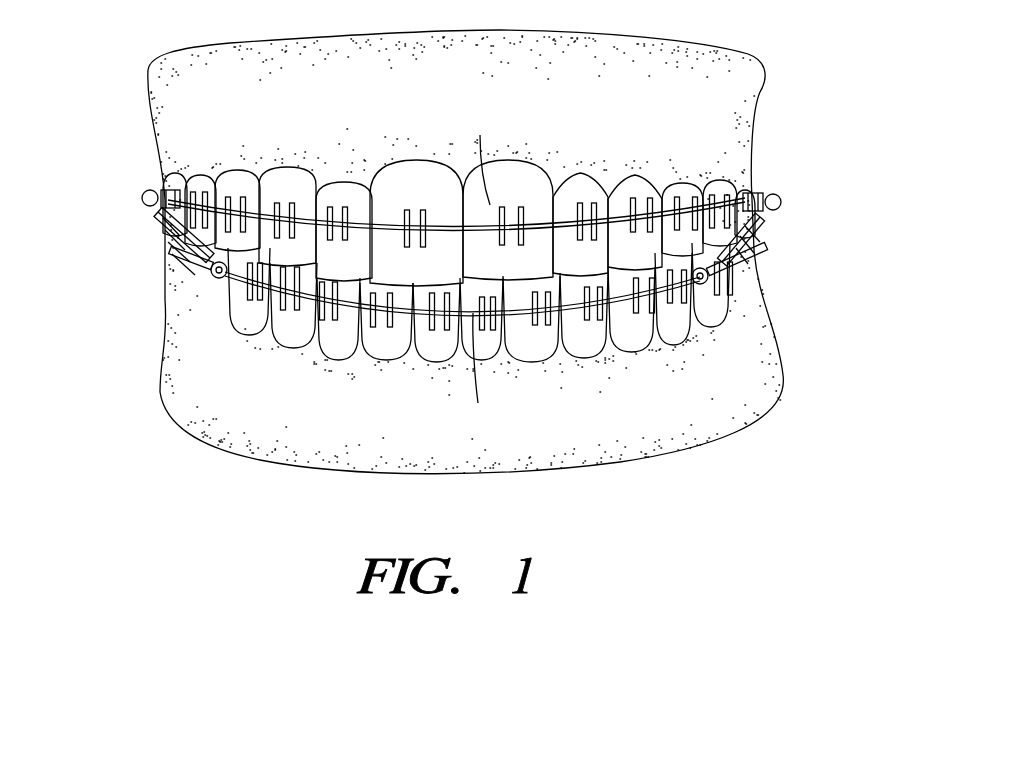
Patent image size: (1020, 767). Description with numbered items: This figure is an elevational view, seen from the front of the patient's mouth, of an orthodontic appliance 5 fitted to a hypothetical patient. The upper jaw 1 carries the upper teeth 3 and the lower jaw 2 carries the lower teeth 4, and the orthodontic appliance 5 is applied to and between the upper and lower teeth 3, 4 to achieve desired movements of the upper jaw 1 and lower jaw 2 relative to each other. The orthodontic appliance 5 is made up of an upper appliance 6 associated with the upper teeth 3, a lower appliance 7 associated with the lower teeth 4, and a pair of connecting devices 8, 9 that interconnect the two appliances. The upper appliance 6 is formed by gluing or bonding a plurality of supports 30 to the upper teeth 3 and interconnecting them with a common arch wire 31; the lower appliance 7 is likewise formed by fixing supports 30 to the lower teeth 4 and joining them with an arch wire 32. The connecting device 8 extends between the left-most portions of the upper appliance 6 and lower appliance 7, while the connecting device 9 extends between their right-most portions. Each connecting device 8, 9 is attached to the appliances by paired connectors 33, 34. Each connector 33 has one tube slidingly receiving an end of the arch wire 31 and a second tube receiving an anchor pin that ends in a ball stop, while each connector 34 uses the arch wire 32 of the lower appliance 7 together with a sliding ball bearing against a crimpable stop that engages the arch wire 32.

The upper jaw 1 is at (292, 88).
The lower jaw 2 is at (205, 395).
The upper teeth 3 is at (588, 183).
The lower teeth 4 is at (670, 325).
The orthodontic appliance 5 is at (795, 215).
The upper appliance 6 is at (668, 202).
The lower appliance 7 is at (313, 305).
The connecting device 8 is at (151, 229).
The connecting device 9 is at (768, 234).
The supports 30 is at (277, 200).
The arch wire 31 is at (480, 135).
The arch wire 32 is at (478, 403).
The connector 33 is at (155, 186).
The connector 34 is at (203, 285).